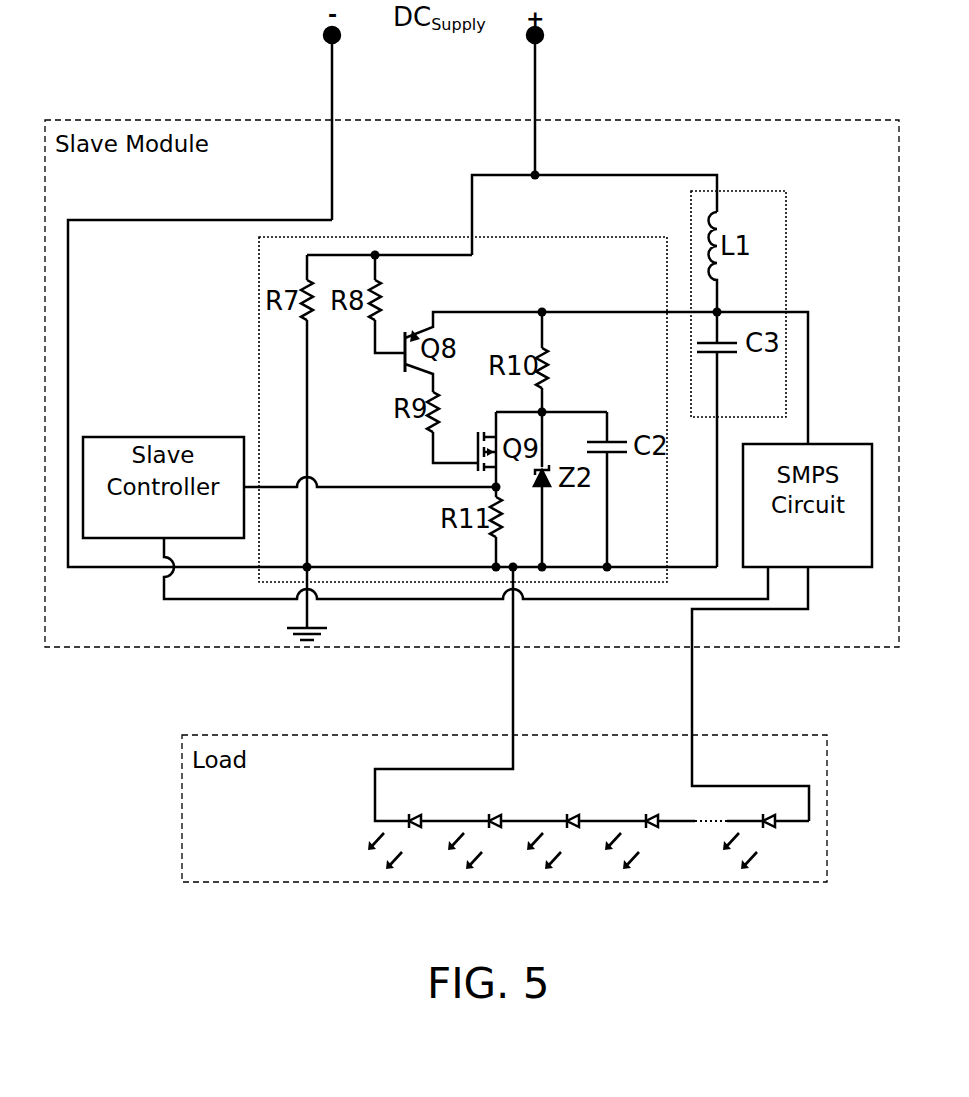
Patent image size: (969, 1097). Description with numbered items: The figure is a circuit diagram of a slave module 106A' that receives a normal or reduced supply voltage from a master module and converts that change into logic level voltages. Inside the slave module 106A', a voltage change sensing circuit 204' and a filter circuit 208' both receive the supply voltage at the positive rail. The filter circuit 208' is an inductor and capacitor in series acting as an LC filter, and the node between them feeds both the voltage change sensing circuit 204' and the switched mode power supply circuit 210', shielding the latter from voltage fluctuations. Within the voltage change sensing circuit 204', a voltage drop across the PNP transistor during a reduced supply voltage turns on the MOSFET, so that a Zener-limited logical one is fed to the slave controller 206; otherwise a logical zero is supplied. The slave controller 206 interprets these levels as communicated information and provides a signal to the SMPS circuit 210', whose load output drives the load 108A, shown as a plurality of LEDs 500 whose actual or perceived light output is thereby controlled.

The slave module 106A' is at (133, 175).
The voltage change sensing circuit 204' is at (218, 260).
The slave controller 206 is at (163, 519).
The filter circuit 208' is at (839, 209).
The switched mode power supply (SMPS) circuit 210' is at (808, 535).
The load 108A is at (285, 760).
The plurality of LEDs 500 is at (588, 820).